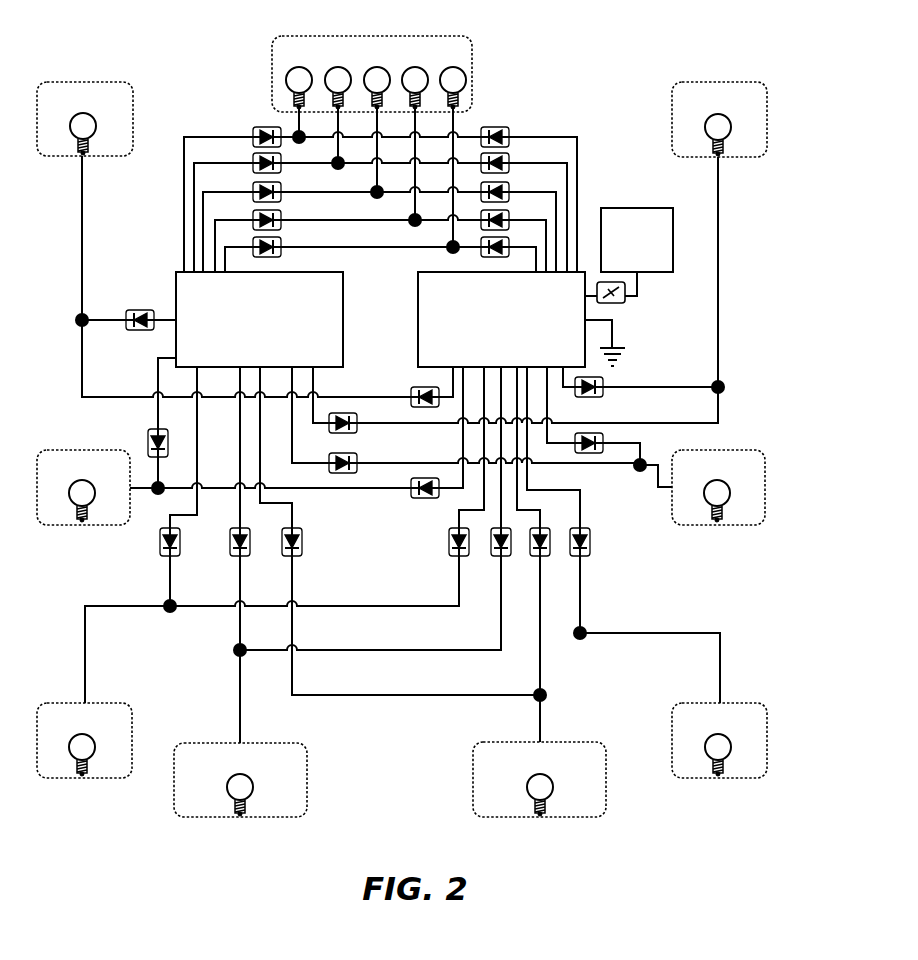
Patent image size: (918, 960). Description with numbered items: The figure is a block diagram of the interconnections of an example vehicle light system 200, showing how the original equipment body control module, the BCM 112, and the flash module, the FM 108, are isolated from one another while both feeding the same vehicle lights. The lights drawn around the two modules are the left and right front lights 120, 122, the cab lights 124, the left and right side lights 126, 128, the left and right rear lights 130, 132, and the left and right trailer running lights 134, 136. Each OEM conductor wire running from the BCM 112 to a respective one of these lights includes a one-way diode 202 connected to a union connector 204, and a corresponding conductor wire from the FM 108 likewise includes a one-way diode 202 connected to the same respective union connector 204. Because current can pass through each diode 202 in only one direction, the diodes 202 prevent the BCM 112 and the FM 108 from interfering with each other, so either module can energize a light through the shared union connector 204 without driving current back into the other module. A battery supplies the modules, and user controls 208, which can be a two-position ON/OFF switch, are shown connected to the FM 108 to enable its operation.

The vehicle light system 200 is at (146, 51).
The one-way diode 202 is at (511, 126).
The union connector 204 is at (637, 476).
The user controls 208 is at (627, 303).
The FM 108 is at (545, 287).
The BCM 112 is at (259, 319).
The left front light 120 is at (133, 116).
The right front light 122 is at (720, 82).
The cab lights 124 is at (473, 74).
The left side light 126 is at (85, 449).
The right side light 128 is at (735, 450).
The left rear light 130 is at (118, 703).
The right rear light 132 is at (752, 703).
The left trailer running light 134 is at (300, 745).
The right trailer running light 136 is at (582, 745).